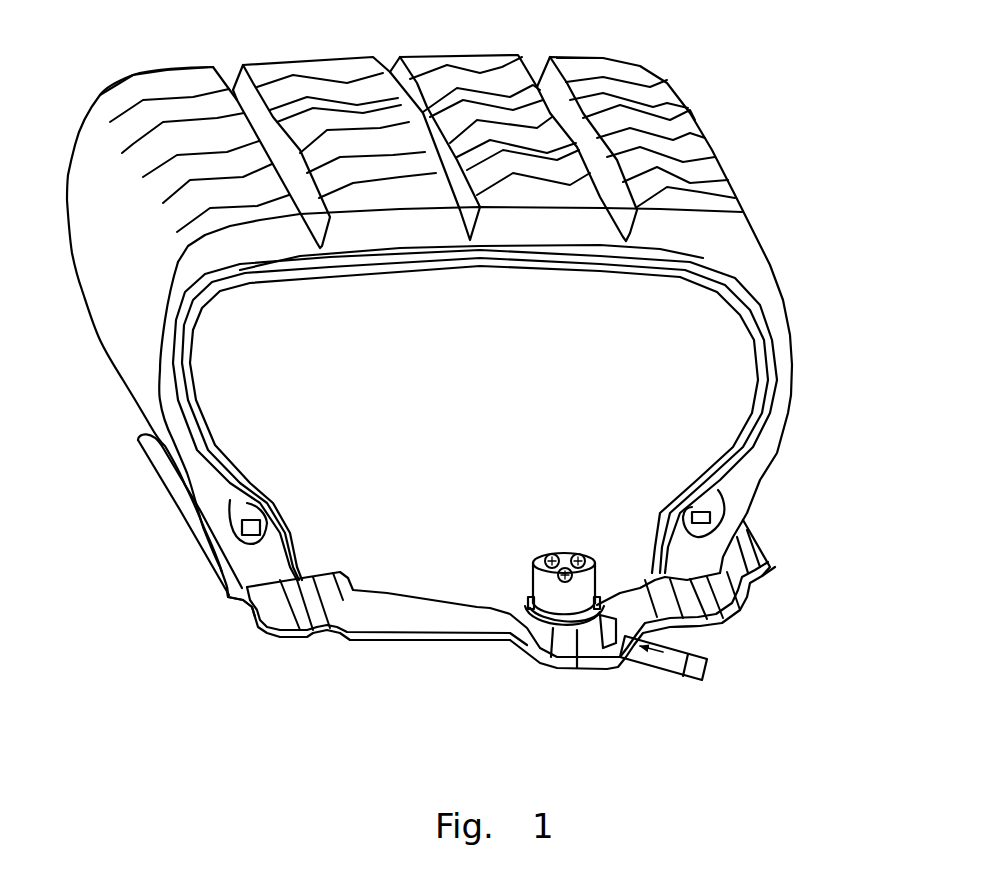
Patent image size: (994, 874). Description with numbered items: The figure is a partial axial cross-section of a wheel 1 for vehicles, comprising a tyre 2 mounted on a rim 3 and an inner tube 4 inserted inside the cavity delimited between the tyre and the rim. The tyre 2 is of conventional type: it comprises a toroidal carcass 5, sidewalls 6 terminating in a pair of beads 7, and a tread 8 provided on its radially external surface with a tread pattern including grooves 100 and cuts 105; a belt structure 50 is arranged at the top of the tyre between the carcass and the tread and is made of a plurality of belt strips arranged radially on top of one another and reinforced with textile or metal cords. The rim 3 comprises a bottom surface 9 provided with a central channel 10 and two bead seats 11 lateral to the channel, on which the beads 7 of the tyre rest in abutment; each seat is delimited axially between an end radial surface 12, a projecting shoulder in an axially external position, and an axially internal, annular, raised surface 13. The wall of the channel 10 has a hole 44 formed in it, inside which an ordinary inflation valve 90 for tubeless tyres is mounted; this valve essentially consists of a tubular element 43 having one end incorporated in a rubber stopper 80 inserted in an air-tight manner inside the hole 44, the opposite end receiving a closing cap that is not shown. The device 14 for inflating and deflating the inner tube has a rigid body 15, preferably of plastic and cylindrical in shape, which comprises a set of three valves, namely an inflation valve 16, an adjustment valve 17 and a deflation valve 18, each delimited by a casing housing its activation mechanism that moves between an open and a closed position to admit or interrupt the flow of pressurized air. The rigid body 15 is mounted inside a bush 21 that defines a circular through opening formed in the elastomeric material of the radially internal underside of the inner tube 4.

The wheel 1 is at (300, 697).
The tyre 2 is at (66, 178).
The rim 3 is at (423, 615).
The inner tube 4 is at (402, 497).
The toroidal carcass 5 is at (474, 423).
The sidewalls 6 is at (465, 415).
The beads 7 is at (478, 514).
The tread 8 is at (497, 154).
The bottom surface 9 is at (430, 675).
The central channel 10 is at (576, 704).
The bead seats 11 is at (516, 651).
The end radial surface 12 is at (471, 654).
The annular raised surface 13 is at (700, 641).
The device for inflating and deflating the inner tube 14 is at (529, 517).
The rigid body 15 is at (533, 647).
The inflation valve 16 is at (541, 483).
The adjustment valve 17 is at (581, 477).
The deflation valve 18 is at (615, 487).
The bush 21 is at (565, 662).
The tubular element 43 is at (709, 706).
The hole 44 is at (654, 693).
The belt structure 50 is at (560, 240).
The rubber stopper 80 is at (600, 665).
The inflation valve for tubeless tyres 90 is at (663, 712).
The grooves 100 is at (368, 132).
The cuts 105 is at (422, 124).